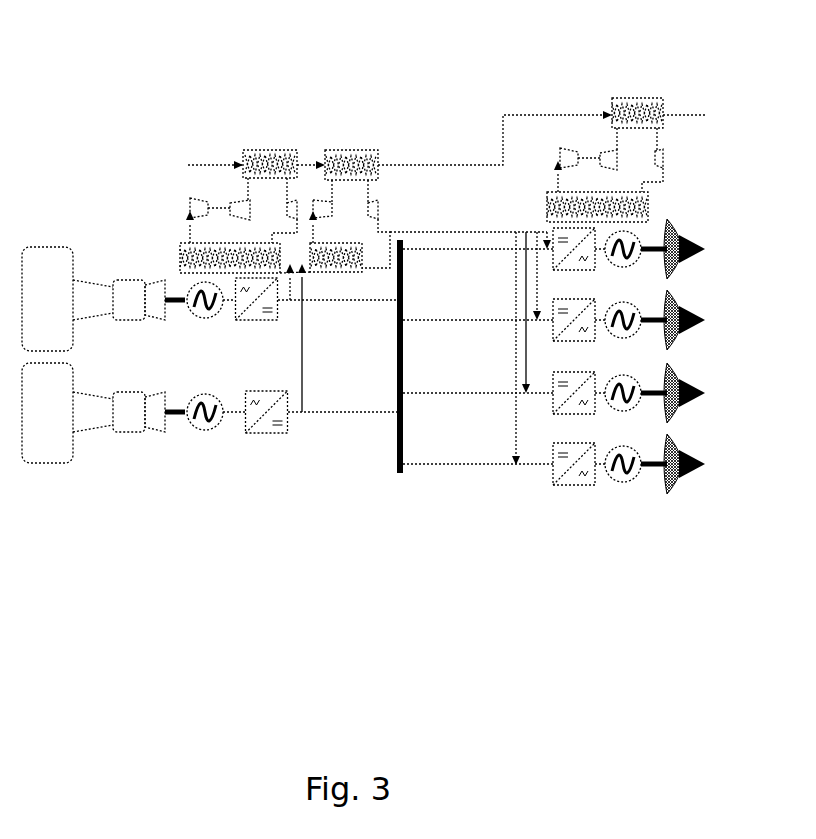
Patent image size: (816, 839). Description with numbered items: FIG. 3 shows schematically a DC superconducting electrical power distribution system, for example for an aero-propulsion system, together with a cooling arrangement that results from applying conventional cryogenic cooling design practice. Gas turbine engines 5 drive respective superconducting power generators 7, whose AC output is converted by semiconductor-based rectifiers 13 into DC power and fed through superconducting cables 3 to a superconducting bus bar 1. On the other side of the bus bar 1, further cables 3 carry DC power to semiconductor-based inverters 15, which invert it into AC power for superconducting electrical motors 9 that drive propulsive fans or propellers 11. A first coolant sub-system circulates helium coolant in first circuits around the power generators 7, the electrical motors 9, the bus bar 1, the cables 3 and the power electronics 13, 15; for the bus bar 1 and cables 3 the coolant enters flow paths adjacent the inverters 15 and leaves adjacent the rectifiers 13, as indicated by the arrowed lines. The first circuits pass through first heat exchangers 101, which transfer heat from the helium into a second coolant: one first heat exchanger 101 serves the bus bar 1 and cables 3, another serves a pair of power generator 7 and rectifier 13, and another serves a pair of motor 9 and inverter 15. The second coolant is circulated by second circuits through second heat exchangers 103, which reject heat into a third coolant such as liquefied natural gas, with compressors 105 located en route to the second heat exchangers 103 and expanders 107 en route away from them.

The superconducting bus bar 1 is at (398, 457).
The superconducting cables 3 is at (334, 413).
The gas turbine engines 5 is at (68, 463).
The superconducting power generators 7 is at (196, 432).
The superconducting electrical motors 9 is at (638, 480).
The propulsive fans or propellers 11 is at (690, 473).
The rectifiers 13 is at (278, 434).
The inverters 15 is at (562, 486).
The first heat exchangers 101 is at (180, 245).
The second heat exchangers 103 is at (262, 150).
The compressors 105 is at (235, 198).
The expanders 107 is at (665, 157).